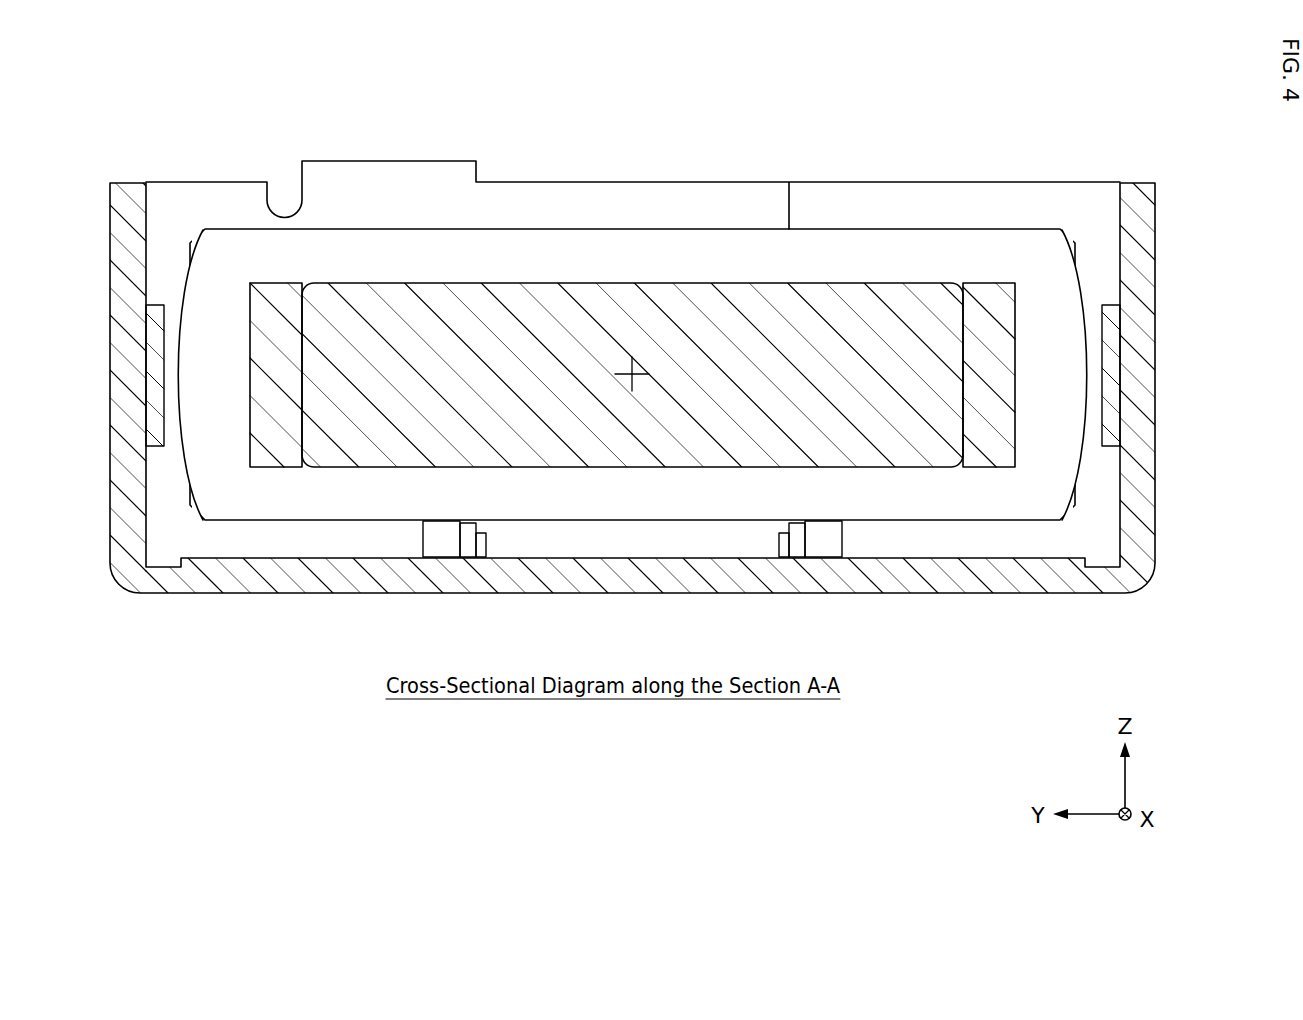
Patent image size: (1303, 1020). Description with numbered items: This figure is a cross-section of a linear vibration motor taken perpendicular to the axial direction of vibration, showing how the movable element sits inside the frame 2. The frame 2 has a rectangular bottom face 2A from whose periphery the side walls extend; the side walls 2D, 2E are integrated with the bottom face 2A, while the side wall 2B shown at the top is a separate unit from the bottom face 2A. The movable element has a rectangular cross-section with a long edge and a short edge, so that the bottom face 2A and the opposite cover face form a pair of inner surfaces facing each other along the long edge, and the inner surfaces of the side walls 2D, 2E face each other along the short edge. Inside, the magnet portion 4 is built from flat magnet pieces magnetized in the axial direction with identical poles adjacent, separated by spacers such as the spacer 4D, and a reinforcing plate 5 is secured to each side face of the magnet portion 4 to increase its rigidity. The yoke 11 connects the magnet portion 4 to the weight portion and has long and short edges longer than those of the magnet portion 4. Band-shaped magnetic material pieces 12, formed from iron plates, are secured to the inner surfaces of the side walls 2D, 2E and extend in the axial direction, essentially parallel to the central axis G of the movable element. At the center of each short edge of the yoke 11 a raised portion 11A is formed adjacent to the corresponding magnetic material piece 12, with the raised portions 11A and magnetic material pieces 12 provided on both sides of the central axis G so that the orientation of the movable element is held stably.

The frame 2 is at (634, 431).
The bottom face 2A is at (368, 553).
The side wall 2B is at (190, 182).
The side wall 2D is at (110, 222).
The side wall 2E is at (1157, 242).
The magnet portion 4 is at (885, 283).
The spacer 4D is at (632, 298).
The reinforcing plate 5 is at (283, 283).
The yoke 11 is at (695, 229).
The raised portion 11A is at (177, 373).
The magnetic material piece 12 is at (163, 437).
The central axis G is at (622, 383).